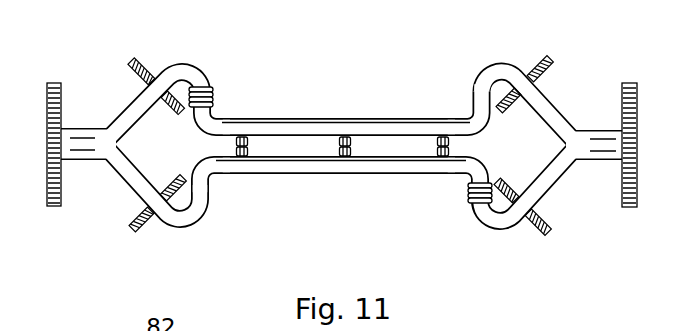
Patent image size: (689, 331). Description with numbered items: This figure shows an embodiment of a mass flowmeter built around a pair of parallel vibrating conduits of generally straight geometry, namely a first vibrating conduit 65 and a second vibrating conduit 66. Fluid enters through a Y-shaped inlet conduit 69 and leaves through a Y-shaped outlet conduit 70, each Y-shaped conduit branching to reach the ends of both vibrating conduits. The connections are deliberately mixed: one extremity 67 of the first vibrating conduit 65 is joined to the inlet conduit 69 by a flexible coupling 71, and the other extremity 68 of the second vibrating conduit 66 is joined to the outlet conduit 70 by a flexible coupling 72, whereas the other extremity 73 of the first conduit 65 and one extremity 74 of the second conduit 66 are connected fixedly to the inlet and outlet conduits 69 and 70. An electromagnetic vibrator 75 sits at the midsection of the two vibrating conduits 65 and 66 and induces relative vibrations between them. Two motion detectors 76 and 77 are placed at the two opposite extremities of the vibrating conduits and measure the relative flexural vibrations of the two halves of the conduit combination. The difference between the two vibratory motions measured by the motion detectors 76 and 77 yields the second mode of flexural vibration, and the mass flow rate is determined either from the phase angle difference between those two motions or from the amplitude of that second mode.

The first vibrating conduit 65 is at (314, 117).
The second vibrating conduit 66 is at (308, 175).
The one extremity of the first vibrating conduit 67 is at (221, 117).
The other extremity of the second vibrating conduit 68 is at (468, 175).
The Y-shaped inlet conduit 69 is at (88, 129).
The Y-shaped outlet conduit 70 is at (600, 130).
The flexible coupling 71 is at (215, 102).
The flexible coupling 72 is at (471, 203).
The other extremity of the first vibrating conduit 73 is at (463, 117).
The one extremity of the second vibrating conduit 74 is at (220, 175).
The electromagnetic vibrator 75 is at (353, 151).
The motion detector 76 is at (249, 151).
The motion detector 77 is at (436, 141).